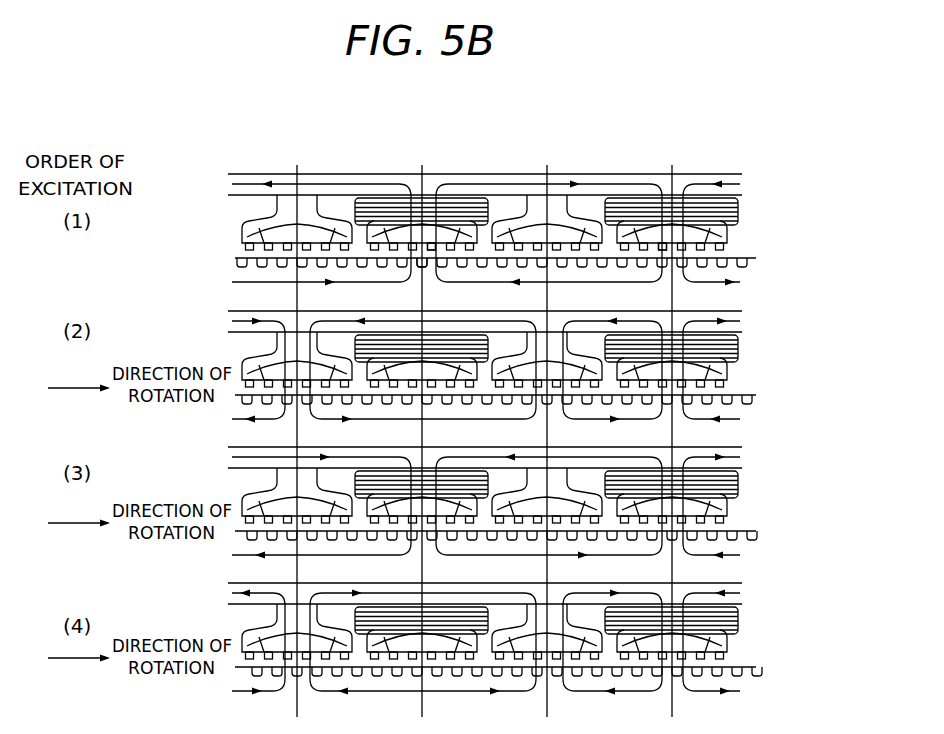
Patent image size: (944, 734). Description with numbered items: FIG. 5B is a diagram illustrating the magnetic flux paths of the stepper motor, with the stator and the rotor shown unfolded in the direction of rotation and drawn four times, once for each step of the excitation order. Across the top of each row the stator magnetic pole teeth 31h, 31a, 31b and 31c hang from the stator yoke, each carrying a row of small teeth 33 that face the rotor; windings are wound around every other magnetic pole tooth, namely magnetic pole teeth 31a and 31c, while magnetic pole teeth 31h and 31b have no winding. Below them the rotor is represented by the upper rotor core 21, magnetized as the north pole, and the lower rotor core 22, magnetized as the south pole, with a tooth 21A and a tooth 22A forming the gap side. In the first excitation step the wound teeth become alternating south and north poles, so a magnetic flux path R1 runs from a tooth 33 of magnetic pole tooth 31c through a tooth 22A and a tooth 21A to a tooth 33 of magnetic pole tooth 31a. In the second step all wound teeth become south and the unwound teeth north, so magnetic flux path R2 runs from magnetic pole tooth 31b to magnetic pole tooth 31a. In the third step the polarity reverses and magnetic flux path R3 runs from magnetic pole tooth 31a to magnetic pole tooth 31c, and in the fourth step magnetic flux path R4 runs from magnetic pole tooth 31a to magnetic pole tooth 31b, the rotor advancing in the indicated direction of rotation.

The upper rotor core 21 is at (733, 272).
The tooth of the upper rotor core 21A is at (426, 262).
The lower rotor core 22 is at (747, 257).
The tooth of the lower rotor core 22A is at (658, 258).
The magnetic pole tooth 31h is at (300, 429).
The magnetic pole tooth 31a is at (423, 429).
The magnetic pole tooth 31b is at (548, 429).
The magnetic pole tooth 31c is at (672, 429).
The tooth 33 is at (436, 250).
The magnetic flux path R1 is at (600, 183).
The magnetic flux path R2 is at (527, 320).
The magnetic flux path R3 is at (560, 456).
The magnetic flux path R4 is at (522, 592).